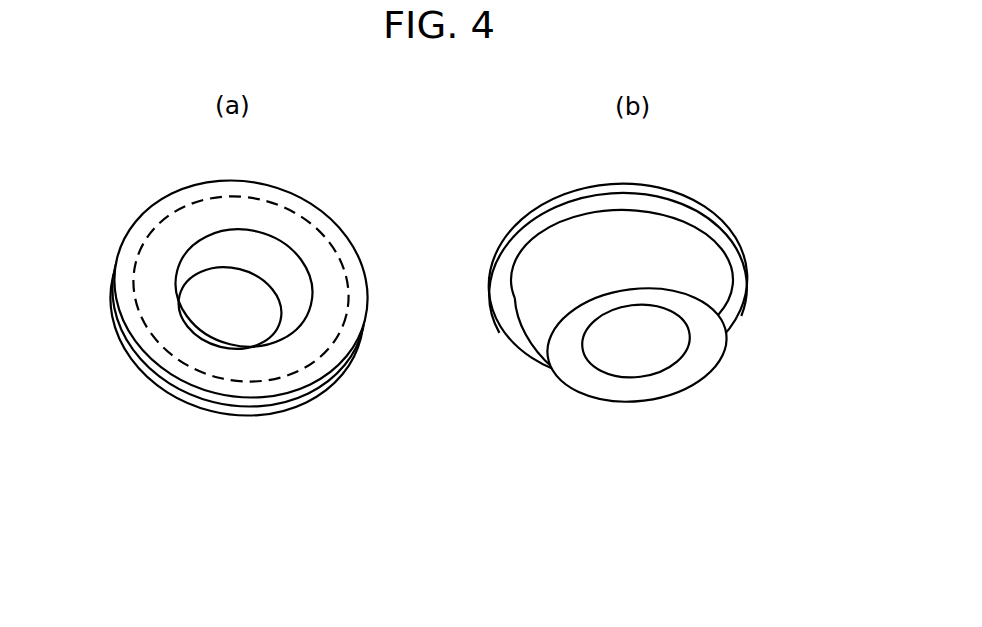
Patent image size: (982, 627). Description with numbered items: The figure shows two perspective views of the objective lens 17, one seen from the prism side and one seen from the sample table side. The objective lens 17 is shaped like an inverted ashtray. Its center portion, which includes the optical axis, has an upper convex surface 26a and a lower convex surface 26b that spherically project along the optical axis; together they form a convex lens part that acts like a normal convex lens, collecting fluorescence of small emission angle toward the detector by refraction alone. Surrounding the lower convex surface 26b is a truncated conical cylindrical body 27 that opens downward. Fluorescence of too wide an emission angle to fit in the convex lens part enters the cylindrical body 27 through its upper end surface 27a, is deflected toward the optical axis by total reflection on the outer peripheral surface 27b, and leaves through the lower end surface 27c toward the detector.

The objective lens 17 is at (468, 305).
The cylindrical body 27 is at (712, 349).
The upper end surface 27a is at (833, 283).
The outer peripheral surface 27b is at (201, 406).
The lower end surface 27c is at (153, 268).
The upper convex surface 26a is at (623, 353).
The lower convex surface 26b is at (245, 318).